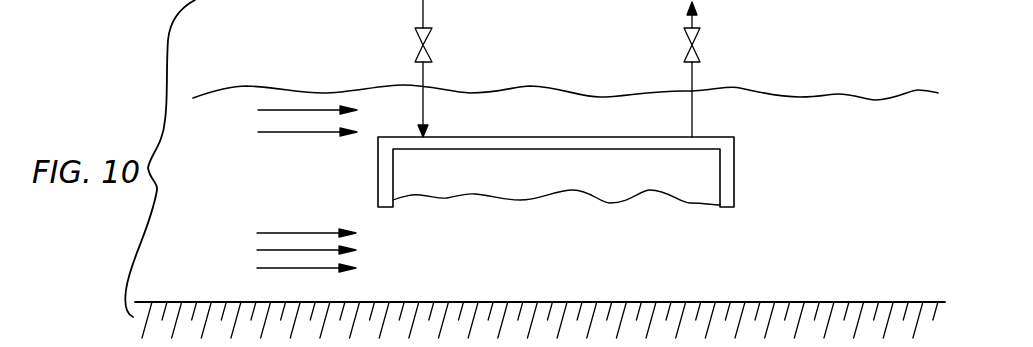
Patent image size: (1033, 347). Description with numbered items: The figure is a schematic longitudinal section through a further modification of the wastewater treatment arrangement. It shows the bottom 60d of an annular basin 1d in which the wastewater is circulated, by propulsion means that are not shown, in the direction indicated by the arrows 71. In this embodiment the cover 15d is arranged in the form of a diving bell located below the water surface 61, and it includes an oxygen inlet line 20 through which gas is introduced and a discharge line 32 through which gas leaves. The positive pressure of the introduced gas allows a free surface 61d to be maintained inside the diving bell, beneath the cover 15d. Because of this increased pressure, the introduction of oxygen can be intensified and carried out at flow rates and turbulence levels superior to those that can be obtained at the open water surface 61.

The water surface 61 is at (220, 89).
The arrows 71 is at (297, 112).
The oxygen inlet line 20 is at (427, 77).
The discharge line 32 is at (692, 80).
The cover 15d is at (556, 137).
The free surface 61d is at (556, 183).
The bottom 60d is at (570, 301).
The annular basin 1d is at (797, 295).